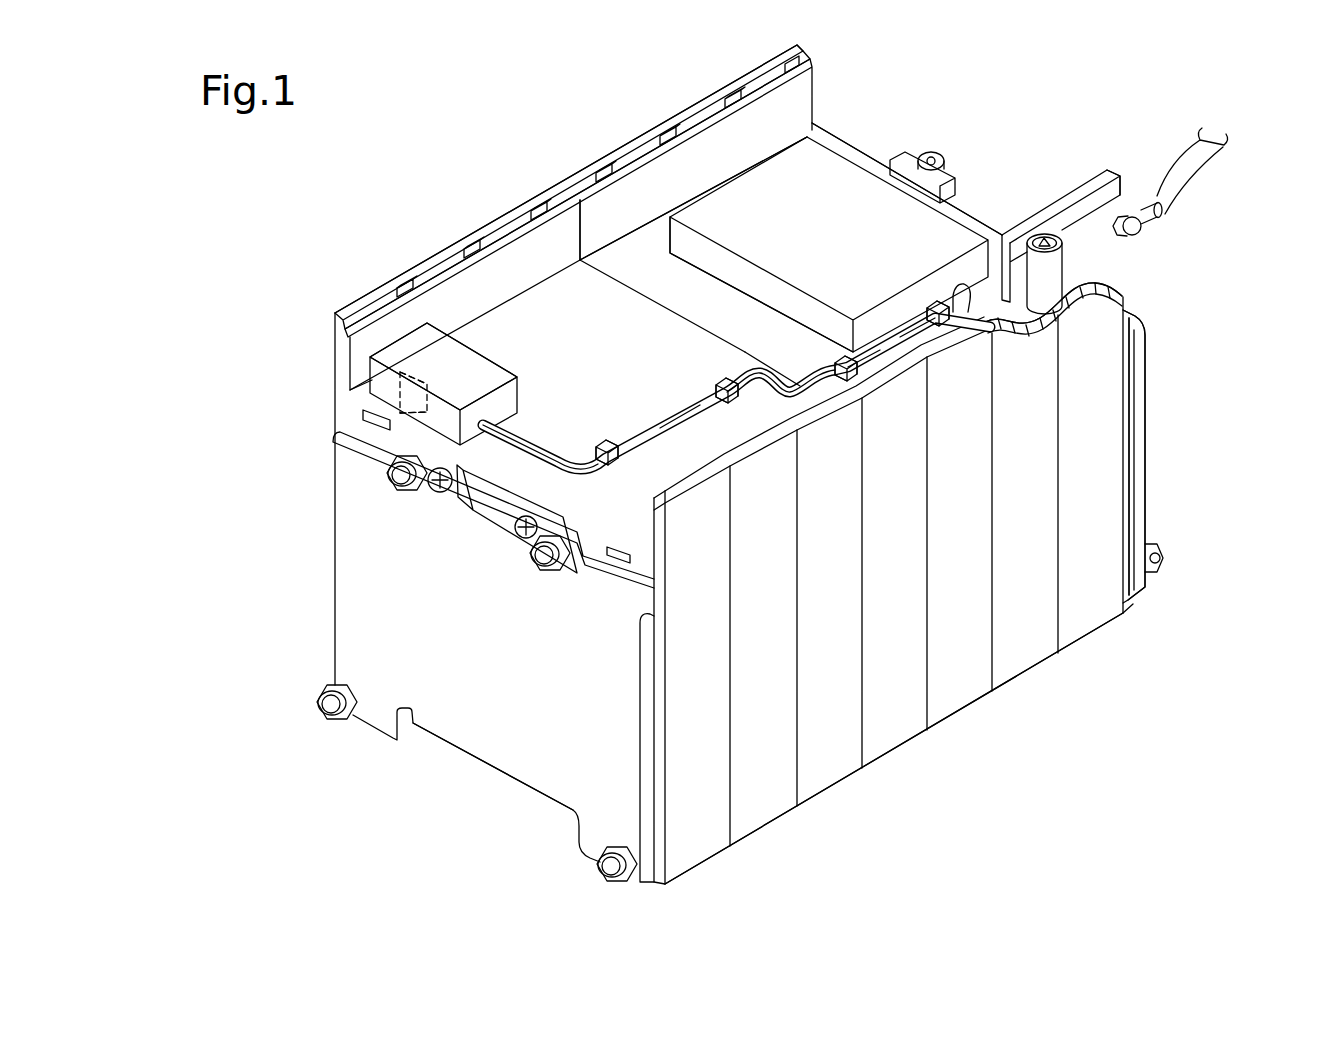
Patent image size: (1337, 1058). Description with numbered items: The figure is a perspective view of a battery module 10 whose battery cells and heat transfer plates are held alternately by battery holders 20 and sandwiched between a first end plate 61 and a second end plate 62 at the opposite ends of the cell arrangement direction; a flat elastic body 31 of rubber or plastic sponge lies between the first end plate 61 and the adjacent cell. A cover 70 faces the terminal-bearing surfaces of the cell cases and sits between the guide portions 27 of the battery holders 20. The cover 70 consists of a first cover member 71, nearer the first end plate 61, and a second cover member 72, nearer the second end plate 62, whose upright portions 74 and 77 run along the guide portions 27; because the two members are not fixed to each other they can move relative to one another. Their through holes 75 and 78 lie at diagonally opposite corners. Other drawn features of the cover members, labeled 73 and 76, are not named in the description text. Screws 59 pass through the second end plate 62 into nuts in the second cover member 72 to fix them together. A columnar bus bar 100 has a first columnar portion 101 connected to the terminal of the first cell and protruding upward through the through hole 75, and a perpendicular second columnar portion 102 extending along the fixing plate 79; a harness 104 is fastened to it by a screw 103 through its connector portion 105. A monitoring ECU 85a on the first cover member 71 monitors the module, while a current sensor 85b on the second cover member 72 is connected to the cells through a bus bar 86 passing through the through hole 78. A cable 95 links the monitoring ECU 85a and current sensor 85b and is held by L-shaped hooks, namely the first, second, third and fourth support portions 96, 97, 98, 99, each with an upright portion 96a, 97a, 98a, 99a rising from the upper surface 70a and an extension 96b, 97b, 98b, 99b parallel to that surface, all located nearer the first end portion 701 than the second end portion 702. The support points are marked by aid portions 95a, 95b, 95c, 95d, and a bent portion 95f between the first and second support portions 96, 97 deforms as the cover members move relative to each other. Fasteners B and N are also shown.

The battery module 10 is at (389, 162).
The battery holder 20 is at (880, 763).
The guide portion 27 is at (405, 285).
The elastic body 31 is at (1130, 468).
The screw 59 is at (440, 493).
The first end plate 61 is at (1148, 417).
The second end plate 62 is at (490, 750).
The cover 70 is at (573, 120).
The upper surface 70a is at (535, 298).
The first cover member 71 is at (598, 182).
The second cover member 72 is at (552, 203).
The side wall plate 73 is at (858, 149).
The upright portion 74 is at (806, 85).
The through hole 75 is at (1070, 323).
The housing box 76 is at (655, 315).
The upright portion 77 is at (493, 255).
The through hole 78 is at (400, 380).
The fixing plate 79 is at (1122, 182).
The monitoring ECU 85a is at (968, 300).
The current sensor 85b is at (432, 350).
The bus bar 86 is at (400, 405).
The cable 95 is at (670, 417).
The first aid portion 95a is at (866, 398).
The second aid portion 95b is at (700, 385).
The third aid portion 95c is at (932, 360).
The fourth aid portion 95d is at (607, 470).
The bent portion 95f is at (781, 365).
The first support portion 96 is at (860, 376).
The upright portion 96a is at (840, 355).
The extension 96b is at (862, 358).
The second support portion 97 is at (726, 383).
The upright portion 97a is at (729, 399).
The extension 97b is at (735, 381).
The third support portion 98 is at (928, 312).
The upright portion 98a is at (922, 318).
The extension 98b is at (947, 298).
The fourth support portion 99 is at (609, 443).
The upright portion 99a is at (598, 450).
The extension 99b is at (618, 428).
The bus bar 100 is at (1018, 258).
The first columnar portion 101 is at (1068, 276).
The second columnar portion 102 is at (1075, 212).
The screw 103 is at (1148, 236).
The harness 104 is at (1230, 157).
The connector portion 105 is at (1178, 205).
The first end portion 701 is at (800, 415).
The second end portion 702 is at (613, 253).
The bolt nut B is at (398, 492).
The nut N is at (947, 155).